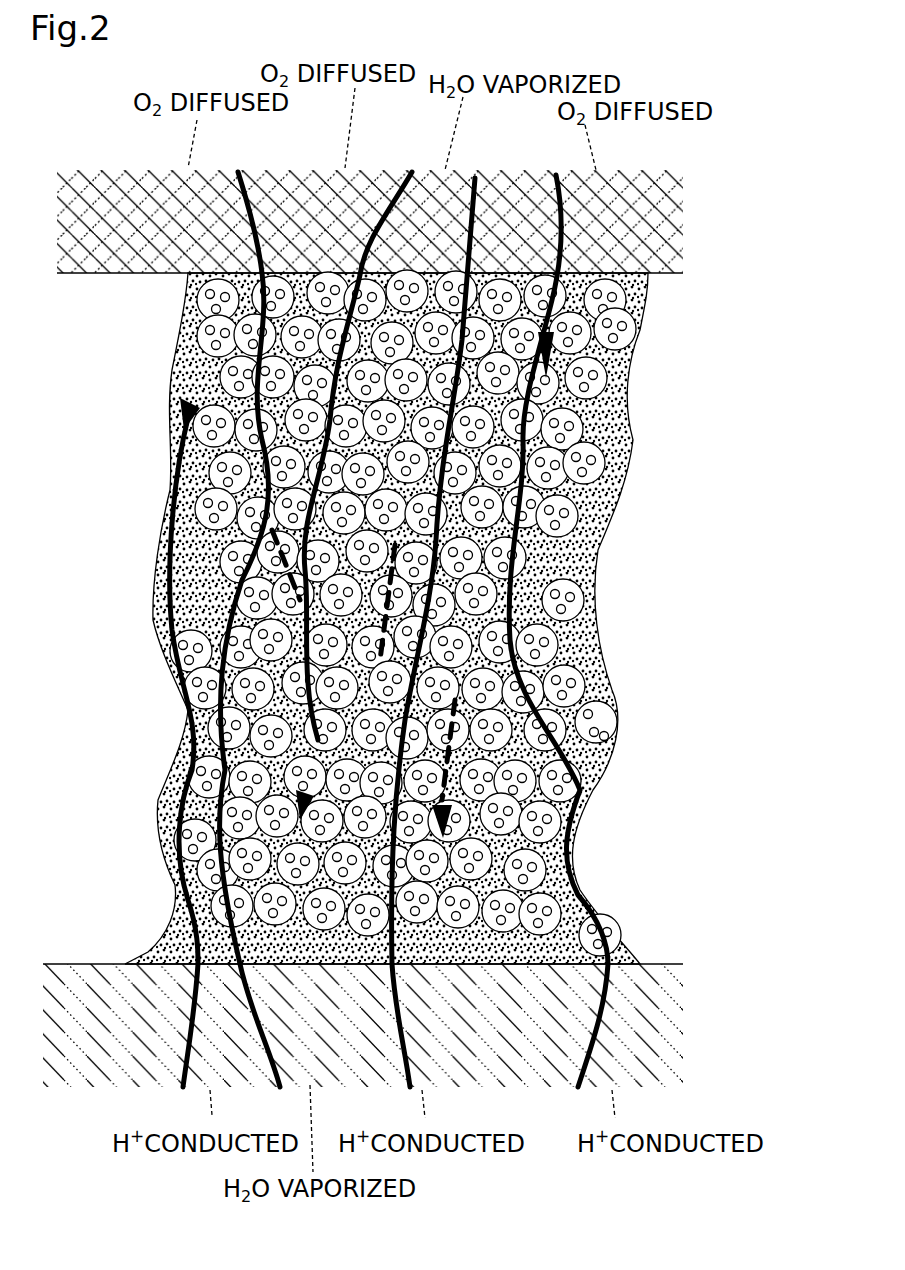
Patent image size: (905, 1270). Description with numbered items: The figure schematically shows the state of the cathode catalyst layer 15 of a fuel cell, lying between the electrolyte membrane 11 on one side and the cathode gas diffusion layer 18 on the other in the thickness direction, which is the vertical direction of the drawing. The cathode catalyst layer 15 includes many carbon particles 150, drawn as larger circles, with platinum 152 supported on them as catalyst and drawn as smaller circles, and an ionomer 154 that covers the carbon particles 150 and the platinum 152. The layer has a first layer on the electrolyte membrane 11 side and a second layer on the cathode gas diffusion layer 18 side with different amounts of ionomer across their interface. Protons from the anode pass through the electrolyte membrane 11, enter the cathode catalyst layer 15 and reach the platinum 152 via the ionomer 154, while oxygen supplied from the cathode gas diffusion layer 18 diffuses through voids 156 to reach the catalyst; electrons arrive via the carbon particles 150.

The cathode gas diffusion layer 18 is at (652, 222).
The electrolyte membrane 11 is at (658, 1008).
The cathode catalyst layer 15 is at (445, 629).
The carbon particles 150 is at (620, 726).
The platinum 152 is at (609, 738).
The ionomer 154 is at (607, 765).
The voids 156 is at (231, 592).